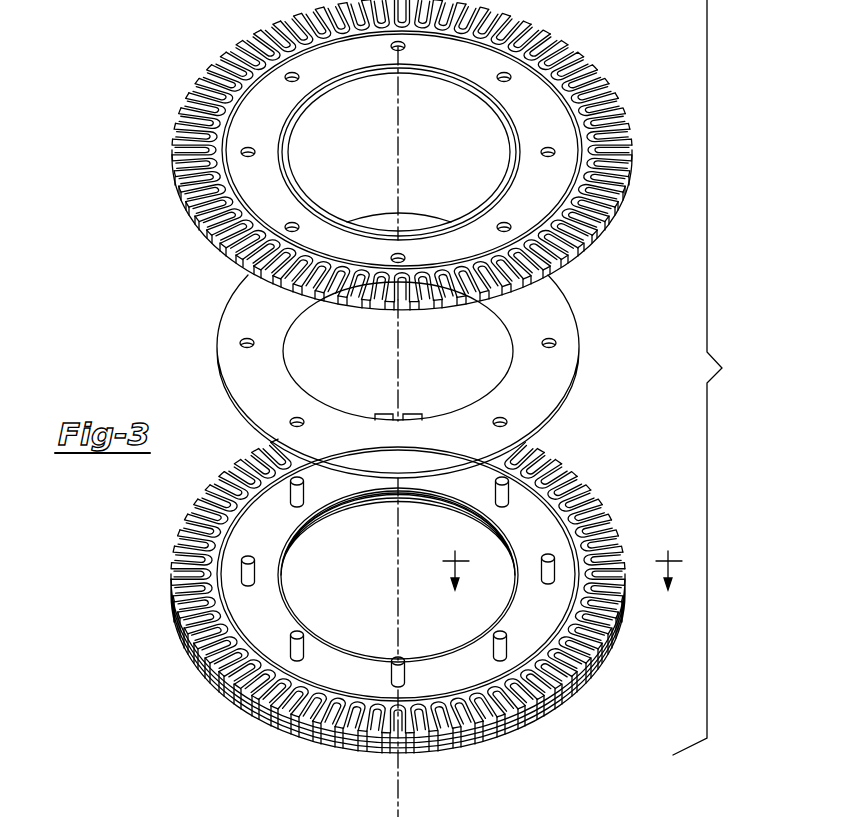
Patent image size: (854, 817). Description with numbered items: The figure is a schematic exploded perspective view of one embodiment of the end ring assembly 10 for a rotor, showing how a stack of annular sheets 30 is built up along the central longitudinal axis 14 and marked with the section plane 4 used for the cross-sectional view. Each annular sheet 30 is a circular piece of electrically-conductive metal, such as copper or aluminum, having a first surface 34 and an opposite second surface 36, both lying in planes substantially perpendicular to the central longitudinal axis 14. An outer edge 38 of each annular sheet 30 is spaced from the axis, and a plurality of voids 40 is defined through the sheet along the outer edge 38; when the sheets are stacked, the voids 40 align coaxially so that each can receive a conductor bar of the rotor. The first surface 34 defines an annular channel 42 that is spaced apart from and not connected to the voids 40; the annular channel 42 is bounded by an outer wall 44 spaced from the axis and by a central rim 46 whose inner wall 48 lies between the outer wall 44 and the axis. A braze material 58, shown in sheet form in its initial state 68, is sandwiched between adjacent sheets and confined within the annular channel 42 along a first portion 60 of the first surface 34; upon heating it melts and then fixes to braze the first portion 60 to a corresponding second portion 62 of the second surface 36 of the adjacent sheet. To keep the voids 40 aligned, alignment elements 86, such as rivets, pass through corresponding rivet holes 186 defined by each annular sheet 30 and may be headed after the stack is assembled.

The end ring assembly 10 is at (710, 377).
The central longitudinal axis 14 is at (398, 796).
The annular sheet 30 is at (598, 72).
The first surface 34 is at (615, 126).
The second surface 36 is at (207, 237).
The outer edge 38 is at (170, 150).
The voids 40 is at (605, 226).
The annular channel 42 is at (533, 78).
The outer wall 44 is at (316, 37).
The central rim 46 is at (303, 100).
The inner wall 48 is at (432, 232).
The braze material 58 is at (574, 378).
The first portion 60 is at (521, 222).
The second portion 62 is at (488, 96).
The initial state 68 is at (190, 324).
The alignment element 86 is at (508, 498).
The rivet holes 186 is at (557, 326).
The section line 4- 4 is at (562, 586).